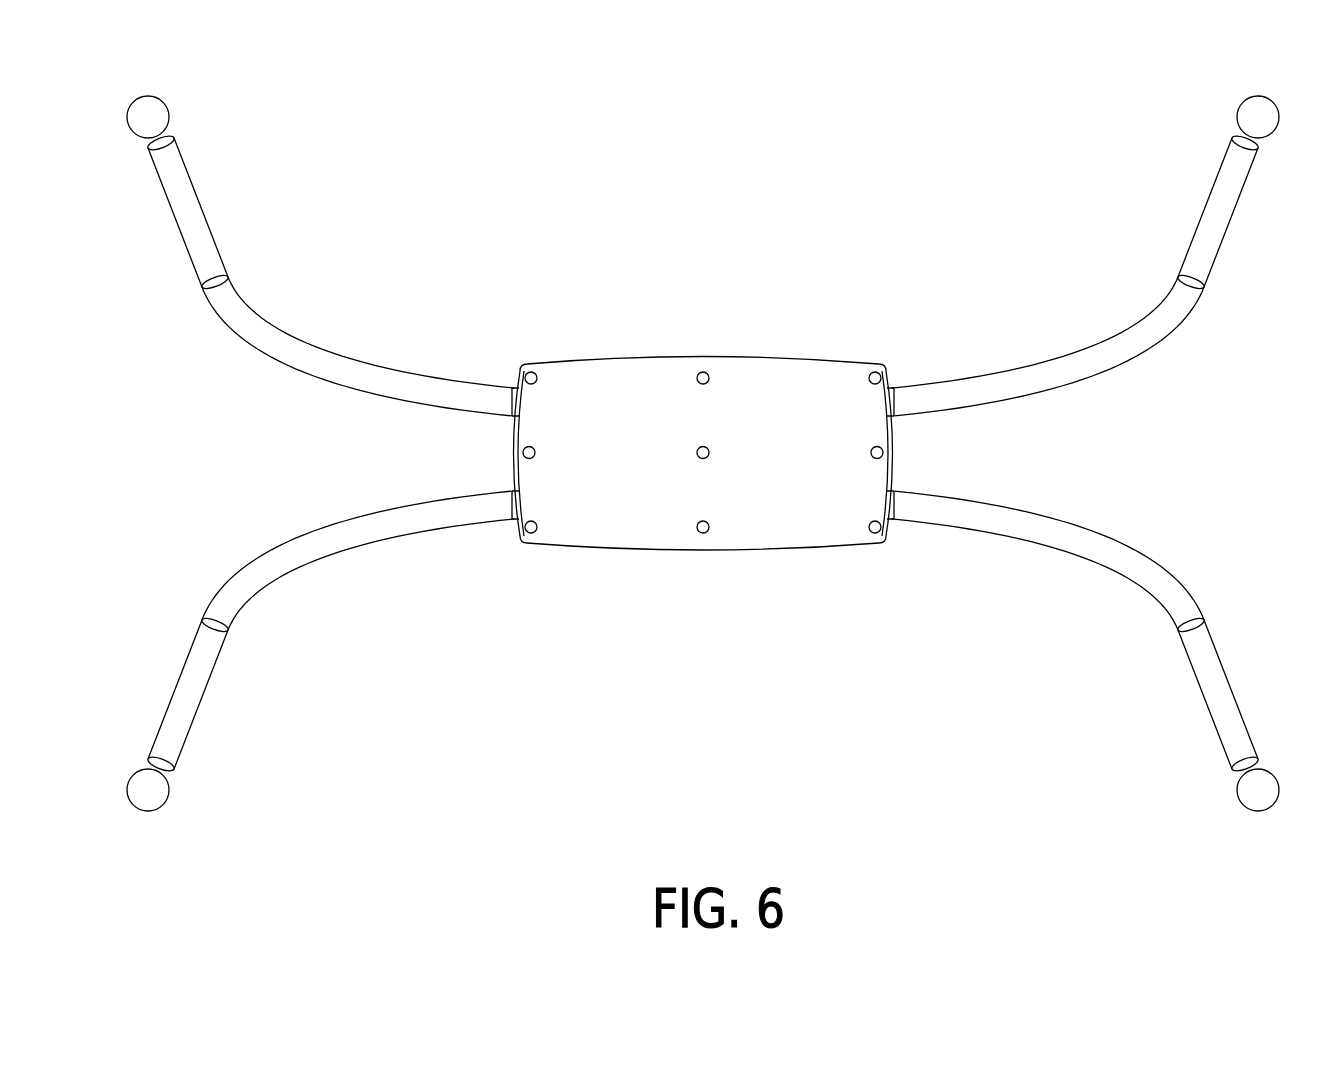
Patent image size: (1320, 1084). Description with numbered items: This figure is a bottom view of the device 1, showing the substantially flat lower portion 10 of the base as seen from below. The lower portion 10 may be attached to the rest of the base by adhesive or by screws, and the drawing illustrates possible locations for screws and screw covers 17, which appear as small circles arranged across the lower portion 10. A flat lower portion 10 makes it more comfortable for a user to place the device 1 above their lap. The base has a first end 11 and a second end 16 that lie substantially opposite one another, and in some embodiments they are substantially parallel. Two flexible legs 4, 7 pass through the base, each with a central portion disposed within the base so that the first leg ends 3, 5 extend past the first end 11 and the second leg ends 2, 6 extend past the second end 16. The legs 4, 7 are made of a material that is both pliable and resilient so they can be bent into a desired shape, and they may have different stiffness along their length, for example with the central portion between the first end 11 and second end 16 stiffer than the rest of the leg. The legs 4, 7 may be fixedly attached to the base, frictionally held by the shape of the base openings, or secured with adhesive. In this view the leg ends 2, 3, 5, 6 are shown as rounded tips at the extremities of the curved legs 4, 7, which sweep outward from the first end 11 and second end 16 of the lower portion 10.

The device 1 is at (204, 484).
The second leg end 2 is at (170, 790).
The first leg end 3 is at (1238, 800).
The flexible leg 4 is at (208, 680).
The first leg end 5 is at (1237, 115).
The second leg end 6 is at (165, 110).
The flexible leg 7 is at (287, 333).
The lower portion 10 is at (752, 550).
The first end 11 is at (893, 458).
The second end 16 is at (510, 450).
The screw covers 17 is at (700, 372).